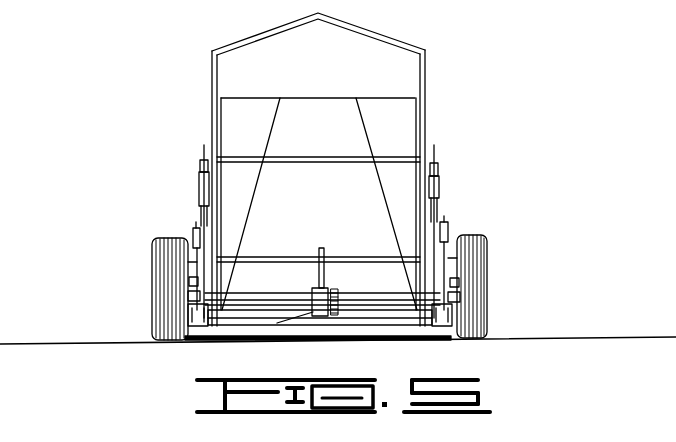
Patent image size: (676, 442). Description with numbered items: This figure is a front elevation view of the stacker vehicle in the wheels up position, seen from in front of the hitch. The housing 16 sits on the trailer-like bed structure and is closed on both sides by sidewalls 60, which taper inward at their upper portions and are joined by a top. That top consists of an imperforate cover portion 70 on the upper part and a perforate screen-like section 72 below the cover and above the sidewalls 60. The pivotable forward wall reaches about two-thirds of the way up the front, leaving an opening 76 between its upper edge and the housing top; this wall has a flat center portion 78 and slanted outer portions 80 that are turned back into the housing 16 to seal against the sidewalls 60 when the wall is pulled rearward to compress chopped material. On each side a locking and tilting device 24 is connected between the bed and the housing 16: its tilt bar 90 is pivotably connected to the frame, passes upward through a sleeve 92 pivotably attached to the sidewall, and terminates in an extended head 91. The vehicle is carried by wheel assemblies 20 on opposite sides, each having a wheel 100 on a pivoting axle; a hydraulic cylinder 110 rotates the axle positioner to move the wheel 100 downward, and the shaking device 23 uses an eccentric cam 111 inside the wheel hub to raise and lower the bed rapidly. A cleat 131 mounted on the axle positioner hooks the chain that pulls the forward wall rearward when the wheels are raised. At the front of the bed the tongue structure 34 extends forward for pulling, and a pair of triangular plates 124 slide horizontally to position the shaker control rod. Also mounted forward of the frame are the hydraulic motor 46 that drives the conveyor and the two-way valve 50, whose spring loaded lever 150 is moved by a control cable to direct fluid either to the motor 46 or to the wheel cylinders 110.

The housing 16 is at (212, 50).
The imperforate cover portion 70 is at (342, 27).
The opening 76 is at (386, 57).
The perforate screen-like section 72 is at (212, 68).
The sidewalls 60 is at (427, 108).
The flat center portion 78 is at (317, 106).
The slanted outer portions 80 is at (256, 104).
The extended head 91 is at (204, 158).
The sleeve 92 is at (200, 172).
The locking and tilting device 24 is at (200, 191).
The tilt bar 90 is at (200, 209).
The cleat 131 is at (194, 233).
The shaking device 23 is at (193, 231).
The wheel assemblies 20 is at (152, 264).
The eccentric shaped cam 111 is at (188, 278).
The hydraulic cylinder 110 is at (190, 290).
The wheel 100 is at (165, 322).
The triangular plates 124 is at (215, 328).
The tongue structure 34 is at (291, 323).
The hydraulic motor 46 is at (313, 292).
The two-way valve 50 is at (326, 293).
The spring loaded lever 150 is at (326, 252).